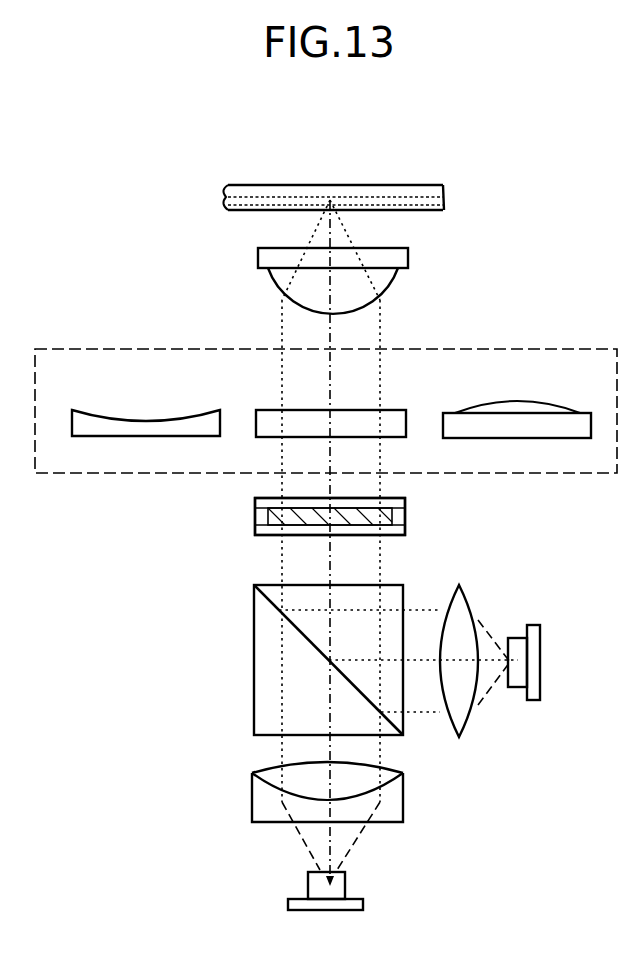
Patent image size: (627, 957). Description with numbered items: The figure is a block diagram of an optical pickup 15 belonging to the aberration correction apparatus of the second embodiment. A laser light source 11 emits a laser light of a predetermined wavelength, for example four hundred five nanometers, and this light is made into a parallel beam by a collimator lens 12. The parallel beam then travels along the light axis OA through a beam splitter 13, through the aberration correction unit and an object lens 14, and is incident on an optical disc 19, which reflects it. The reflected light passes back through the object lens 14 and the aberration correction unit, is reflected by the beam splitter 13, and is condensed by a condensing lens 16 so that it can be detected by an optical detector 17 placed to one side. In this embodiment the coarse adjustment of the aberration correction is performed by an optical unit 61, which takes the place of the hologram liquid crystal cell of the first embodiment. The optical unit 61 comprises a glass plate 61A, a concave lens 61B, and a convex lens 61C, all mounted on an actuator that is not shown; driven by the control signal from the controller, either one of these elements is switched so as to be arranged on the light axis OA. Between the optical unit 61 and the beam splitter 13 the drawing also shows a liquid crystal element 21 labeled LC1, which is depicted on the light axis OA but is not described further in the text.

The laser light source 11 is at (288, 902).
The collimator lens 12 is at (252, 785).
The beam splitter 13 is at (254, 622).
The object lens 14 is at (258, 262).
The optical pickup 15 is at (543, 277).
The condensing lens 16 is at (459, 738).
The optical detector 17 is at (518, 702).
The optical disc 19 is at (445, 197).
The liquid crystal element 21 is at (407, 512).
The optical unit 61 is at (573, 350).
The glass plate 61A is at (397, 410).
The concave lens 61B is at (72, 410).
The convex lens 61C is at (577, 413).
The light axis OA is at (347, 543).
The liquid crystal layer LC1 is at (302, 516).